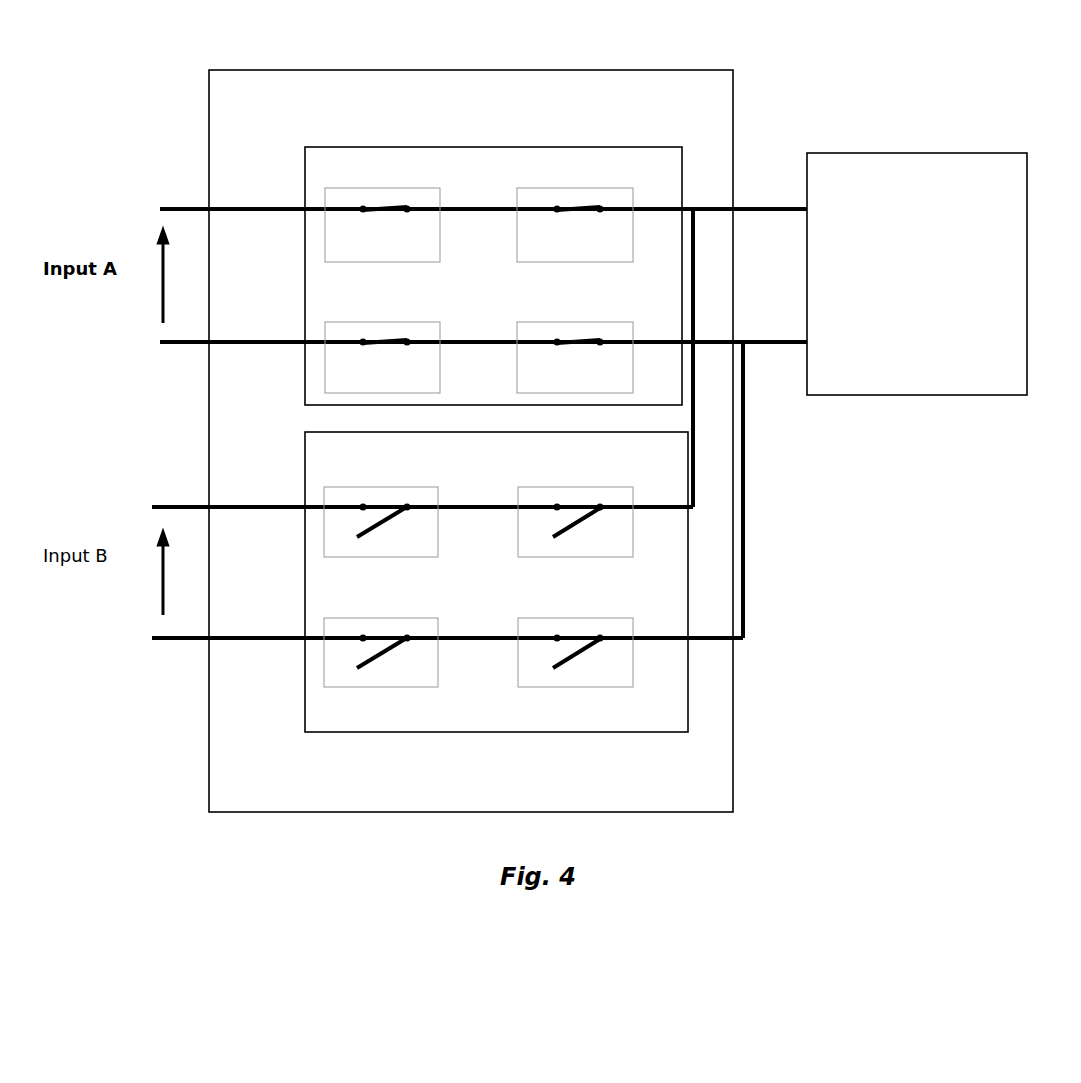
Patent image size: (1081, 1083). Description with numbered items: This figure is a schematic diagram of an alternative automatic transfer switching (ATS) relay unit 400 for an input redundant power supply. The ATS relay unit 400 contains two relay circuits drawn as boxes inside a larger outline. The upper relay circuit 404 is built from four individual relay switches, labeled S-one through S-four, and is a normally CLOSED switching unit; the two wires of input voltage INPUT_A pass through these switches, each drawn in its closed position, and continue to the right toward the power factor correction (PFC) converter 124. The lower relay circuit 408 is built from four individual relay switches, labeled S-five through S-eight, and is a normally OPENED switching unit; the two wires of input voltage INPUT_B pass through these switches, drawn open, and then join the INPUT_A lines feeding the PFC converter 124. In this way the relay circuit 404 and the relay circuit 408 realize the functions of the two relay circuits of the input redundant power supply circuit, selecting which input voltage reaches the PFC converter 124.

The ATS relay unit 400 is at (759, 818).
The relay circuit 404 is at (700, 154).
The relay circuit 408 is at (710, 557).
The power factor correction (PFC) converter 124 is at (917, 264).